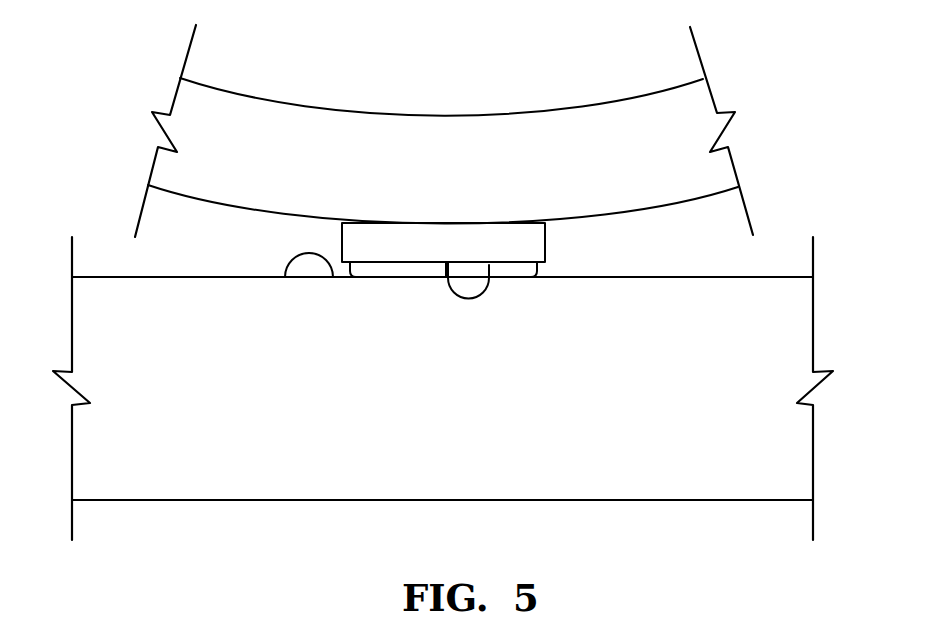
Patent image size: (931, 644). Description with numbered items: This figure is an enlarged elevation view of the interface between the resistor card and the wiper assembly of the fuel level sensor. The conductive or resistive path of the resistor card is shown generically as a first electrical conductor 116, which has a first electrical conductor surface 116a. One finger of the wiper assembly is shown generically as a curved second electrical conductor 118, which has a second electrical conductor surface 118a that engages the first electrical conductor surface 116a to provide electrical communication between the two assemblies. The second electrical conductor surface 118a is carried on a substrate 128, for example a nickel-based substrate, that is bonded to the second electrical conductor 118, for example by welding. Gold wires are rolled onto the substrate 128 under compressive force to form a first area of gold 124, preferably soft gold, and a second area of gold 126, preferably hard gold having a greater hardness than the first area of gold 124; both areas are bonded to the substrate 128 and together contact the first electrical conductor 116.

The first electrical conductor 116 is at (771, 276).
The first electrical conductor surface 116a is at (285, 277).
The second electrical conductor 118 is at (478, 113).
The second electrical conductor surface 118a is at (488, 265).
The first area of gold 124 is at (387, 270).
The second area of gold 126 is at (507, 270).
The substrate 128 is at (418, 247).